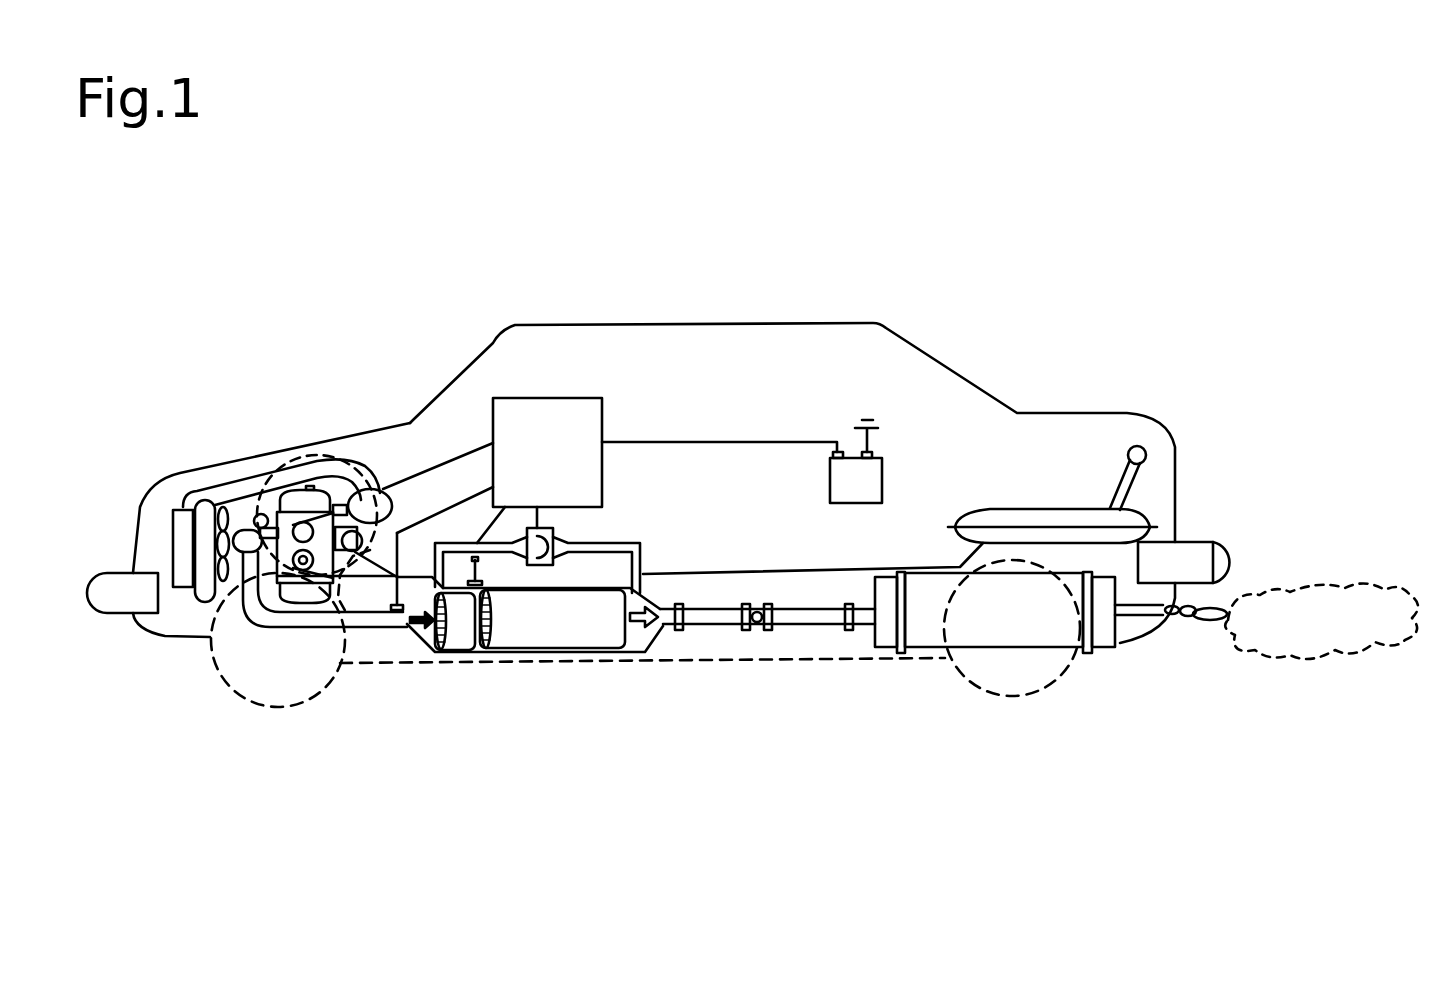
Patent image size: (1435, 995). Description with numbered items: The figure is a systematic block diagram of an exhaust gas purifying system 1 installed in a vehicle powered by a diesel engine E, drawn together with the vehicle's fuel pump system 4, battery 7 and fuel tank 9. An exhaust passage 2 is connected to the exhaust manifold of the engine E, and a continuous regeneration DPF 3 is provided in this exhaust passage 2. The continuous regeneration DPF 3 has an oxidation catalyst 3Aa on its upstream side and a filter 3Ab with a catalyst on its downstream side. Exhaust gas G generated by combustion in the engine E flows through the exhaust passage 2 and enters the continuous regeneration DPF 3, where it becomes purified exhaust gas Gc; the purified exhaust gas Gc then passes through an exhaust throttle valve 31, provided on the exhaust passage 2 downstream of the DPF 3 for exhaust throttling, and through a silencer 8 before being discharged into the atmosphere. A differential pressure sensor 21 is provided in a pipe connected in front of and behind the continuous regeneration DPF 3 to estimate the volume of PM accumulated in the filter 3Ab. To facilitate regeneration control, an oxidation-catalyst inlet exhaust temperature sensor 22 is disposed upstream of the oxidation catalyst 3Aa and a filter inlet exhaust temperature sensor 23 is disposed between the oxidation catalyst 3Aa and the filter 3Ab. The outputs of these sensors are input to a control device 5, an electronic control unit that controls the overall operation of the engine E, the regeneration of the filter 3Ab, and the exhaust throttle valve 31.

The exhaust gas purifying system 1 is at (735, 287).
The diesel engine E is at (278, 503).
The exhaust passage 2 is at (300, 649).
The oxidation-catalyst inlet exhaust temperature sensor 22 is at (343, 613).
The fuel pump system 4 is at (372, 490).
The control device 5 is at (570, 430).
The battery 7 is at (858, 458).
The silencer 8 is at (917, 587).
The fuel tank 9 is at (1083, 507).
The continuous regeneration DPF 3 is at (535, 661).
The oxidation catalyst 3Aa is at (460, 637).
The filter with a catalyst 3Ab is at (571, 633).
The filter inlet exhaust temperature sensor 23 is at (478, 564).
The differential pressure sensor 21 is at (560, 529).
The exhaust gas G is at (426, 638).
The purified exhaust gas Gc is at (654, 627).
The exhaust throttle valve 31 is at (757, 630).